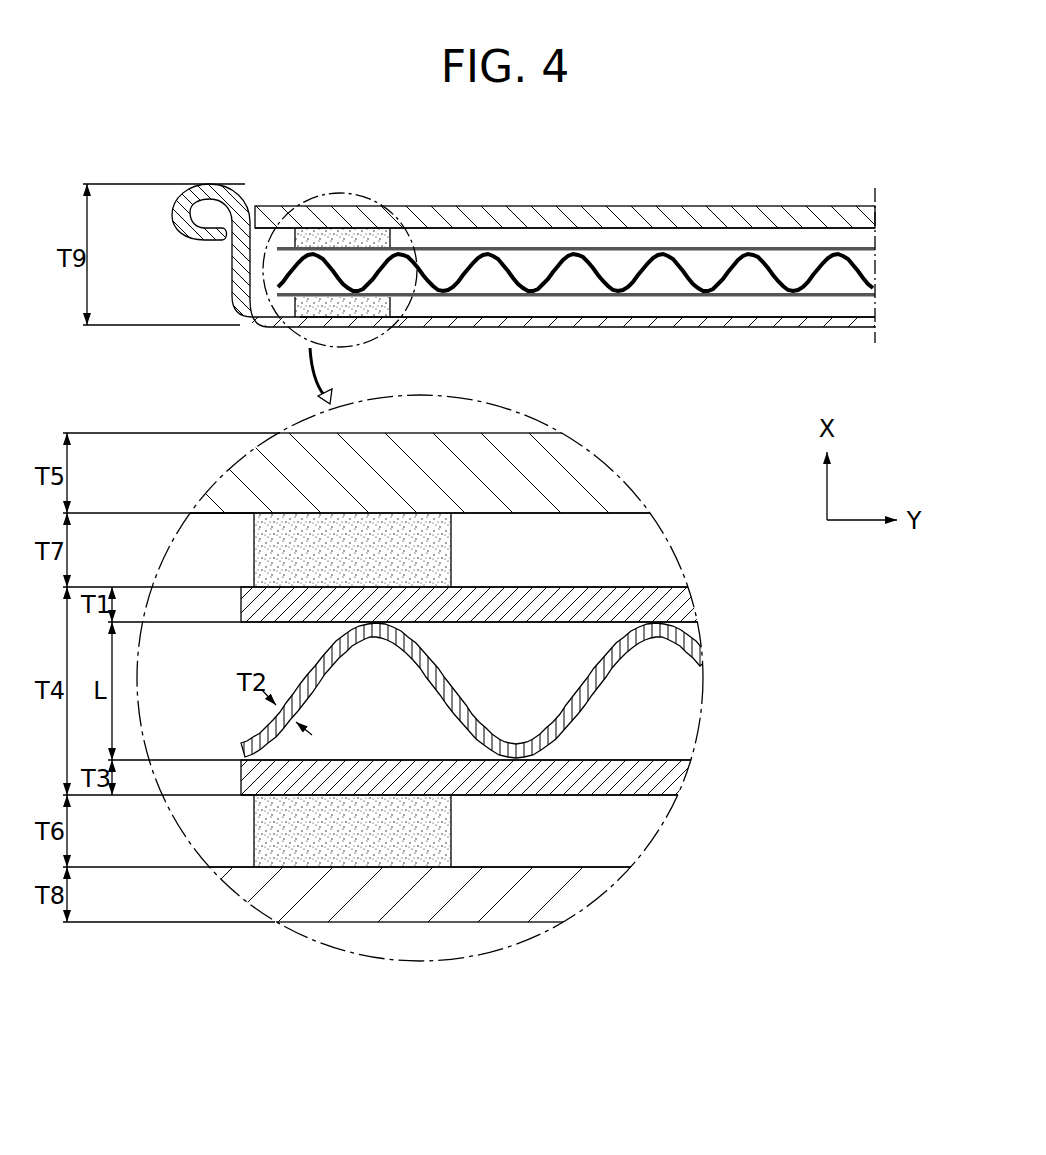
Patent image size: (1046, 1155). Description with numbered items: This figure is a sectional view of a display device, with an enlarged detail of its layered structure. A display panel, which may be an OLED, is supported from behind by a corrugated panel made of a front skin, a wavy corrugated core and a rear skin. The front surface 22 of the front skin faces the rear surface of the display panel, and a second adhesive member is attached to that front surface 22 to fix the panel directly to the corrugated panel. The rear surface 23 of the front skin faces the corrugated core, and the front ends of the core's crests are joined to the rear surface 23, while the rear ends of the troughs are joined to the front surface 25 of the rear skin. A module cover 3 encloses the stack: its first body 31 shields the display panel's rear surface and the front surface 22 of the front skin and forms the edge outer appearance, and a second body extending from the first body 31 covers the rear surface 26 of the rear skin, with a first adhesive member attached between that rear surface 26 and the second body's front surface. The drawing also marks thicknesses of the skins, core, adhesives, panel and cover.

The module cover 3 is at (489, 255).
The front surface of the front skin 22 is at (550, 588).
The rear surface of the front skin 23 is at (580, 622).
The front surface of the rear skin 25 is at (498, 805).
The rear surface of the rear skin 26 is at (417, 795).
The first body 31 is at (232, 268).